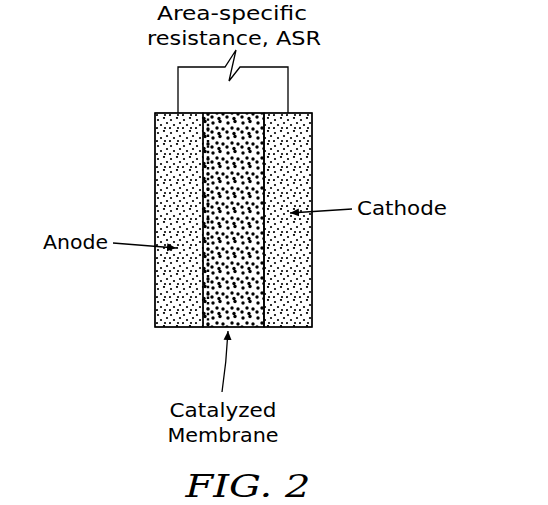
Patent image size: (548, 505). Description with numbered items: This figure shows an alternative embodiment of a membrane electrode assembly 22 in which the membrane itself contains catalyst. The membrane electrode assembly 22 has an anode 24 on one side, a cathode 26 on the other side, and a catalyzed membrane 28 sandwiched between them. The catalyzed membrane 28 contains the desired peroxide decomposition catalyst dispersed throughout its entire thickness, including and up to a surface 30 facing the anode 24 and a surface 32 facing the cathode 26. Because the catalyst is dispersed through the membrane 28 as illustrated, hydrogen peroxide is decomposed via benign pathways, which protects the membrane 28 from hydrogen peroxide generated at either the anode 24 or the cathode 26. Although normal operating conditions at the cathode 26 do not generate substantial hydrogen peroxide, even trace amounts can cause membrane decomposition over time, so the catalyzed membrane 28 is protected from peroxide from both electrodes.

The membrane electrode assembly 22 is at (346, 131).
The anode 24 is at (155, 167).
The cathode 26 is at (305, 263).
The catalyzed membrane 28 is at (255, 318).
The surface facing anode 30 is at (206, 141).
The surface facing cathode 32 is at (265, 183).